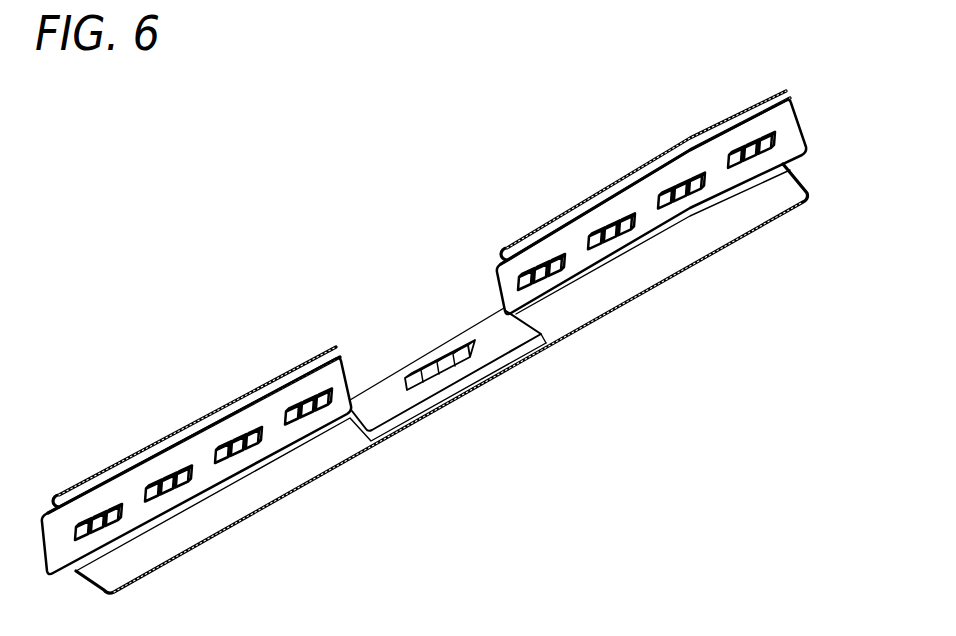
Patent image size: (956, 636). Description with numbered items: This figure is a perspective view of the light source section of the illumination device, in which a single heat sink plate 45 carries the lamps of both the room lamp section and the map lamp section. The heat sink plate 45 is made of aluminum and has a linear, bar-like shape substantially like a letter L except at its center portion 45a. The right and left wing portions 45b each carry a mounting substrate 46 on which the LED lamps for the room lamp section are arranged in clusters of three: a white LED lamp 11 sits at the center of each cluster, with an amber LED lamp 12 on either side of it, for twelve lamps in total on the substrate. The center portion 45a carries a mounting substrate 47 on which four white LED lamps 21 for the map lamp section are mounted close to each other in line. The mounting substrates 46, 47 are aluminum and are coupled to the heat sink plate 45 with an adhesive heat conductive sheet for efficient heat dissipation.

The white LED lamp 11 is at (98, 513).
The amber LED lamp 12 is at (82, 521).
The LED lamp 21 is at (450, 356).
The heat sink plate 45 is at (432, 342).
The center portion 45a is at (468, 393).
The wing portion 45b is at (187, 423).
The mounting substrate 46 is at (798, 132).
The mounting substrate 47 is at (405, 408).